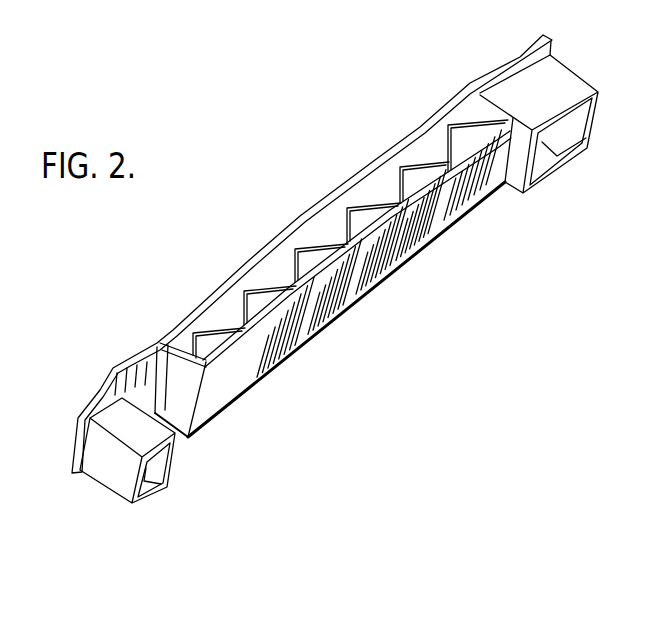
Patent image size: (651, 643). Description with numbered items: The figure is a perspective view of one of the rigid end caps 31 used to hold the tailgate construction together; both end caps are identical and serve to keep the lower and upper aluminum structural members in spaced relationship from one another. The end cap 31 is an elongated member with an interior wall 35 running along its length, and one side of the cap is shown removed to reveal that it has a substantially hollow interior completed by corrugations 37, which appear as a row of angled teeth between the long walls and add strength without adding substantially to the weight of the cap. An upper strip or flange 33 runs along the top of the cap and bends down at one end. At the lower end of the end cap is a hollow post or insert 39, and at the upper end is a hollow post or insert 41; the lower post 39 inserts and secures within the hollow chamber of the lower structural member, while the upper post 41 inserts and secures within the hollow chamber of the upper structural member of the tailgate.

The end cap 31 is at (297, 188).
The top flange 33 is at (225, 294).
The interior wall 35 is at (333, 308).
The corrugations 37 is at (322, 258).
The hollow post 39 is at (122, 502).
The hollow post 41 is at (552, 182).